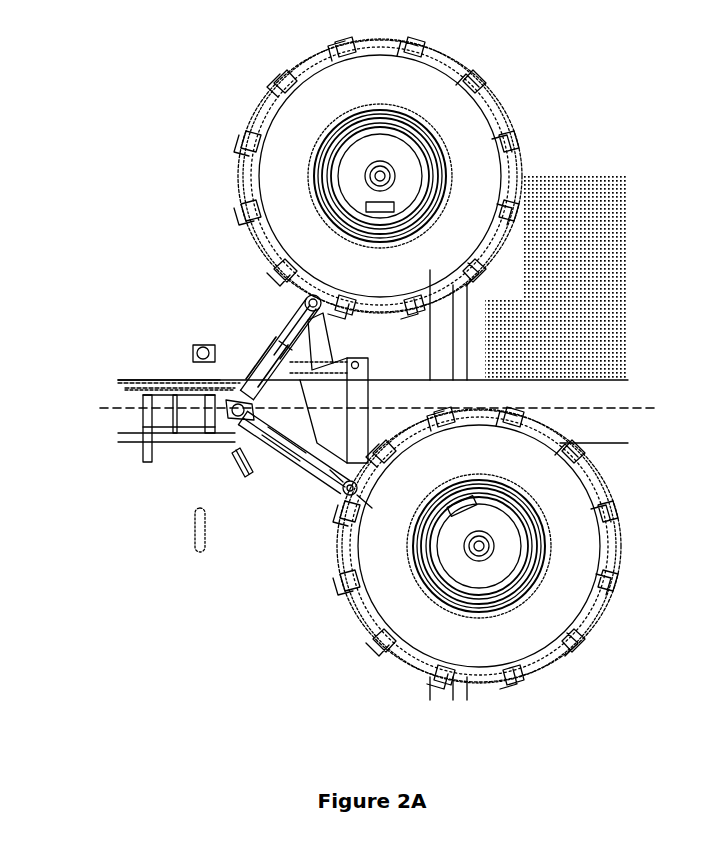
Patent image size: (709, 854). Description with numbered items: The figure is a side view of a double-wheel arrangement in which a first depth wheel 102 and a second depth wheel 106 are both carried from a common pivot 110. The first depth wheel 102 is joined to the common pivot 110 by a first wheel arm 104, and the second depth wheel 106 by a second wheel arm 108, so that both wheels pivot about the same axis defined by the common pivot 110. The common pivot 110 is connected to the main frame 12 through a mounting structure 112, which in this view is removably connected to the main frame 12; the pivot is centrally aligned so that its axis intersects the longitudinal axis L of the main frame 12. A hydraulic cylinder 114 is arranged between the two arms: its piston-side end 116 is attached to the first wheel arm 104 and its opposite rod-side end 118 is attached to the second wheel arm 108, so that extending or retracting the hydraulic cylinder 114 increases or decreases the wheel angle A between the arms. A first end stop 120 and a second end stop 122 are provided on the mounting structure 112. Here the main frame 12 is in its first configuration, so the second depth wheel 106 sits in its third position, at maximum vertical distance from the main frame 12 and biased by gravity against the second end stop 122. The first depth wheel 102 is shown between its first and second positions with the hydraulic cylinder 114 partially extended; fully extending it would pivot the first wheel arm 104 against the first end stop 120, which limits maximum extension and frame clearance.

The main frame 12 is at (645, 408).
The first depth wheel 102 is at (583, 497).
The first wheel arm 104 is at (322, 467).
The second depth wheel 106 is at (482, 132).
The second wheel arm 108 is at (278, 332).
The common pivot 110 is at (228, 417).
The mounting structure 112 is at (122, 449).
The hydraulic cylinder 114 is at (360, 406).
The piston-side end 116 is at (340, 460).
The upper pivot 118 is at (310, 301).
The first end stop 120 is at (242, 452).
The second end stop 122 is at (240, 375).